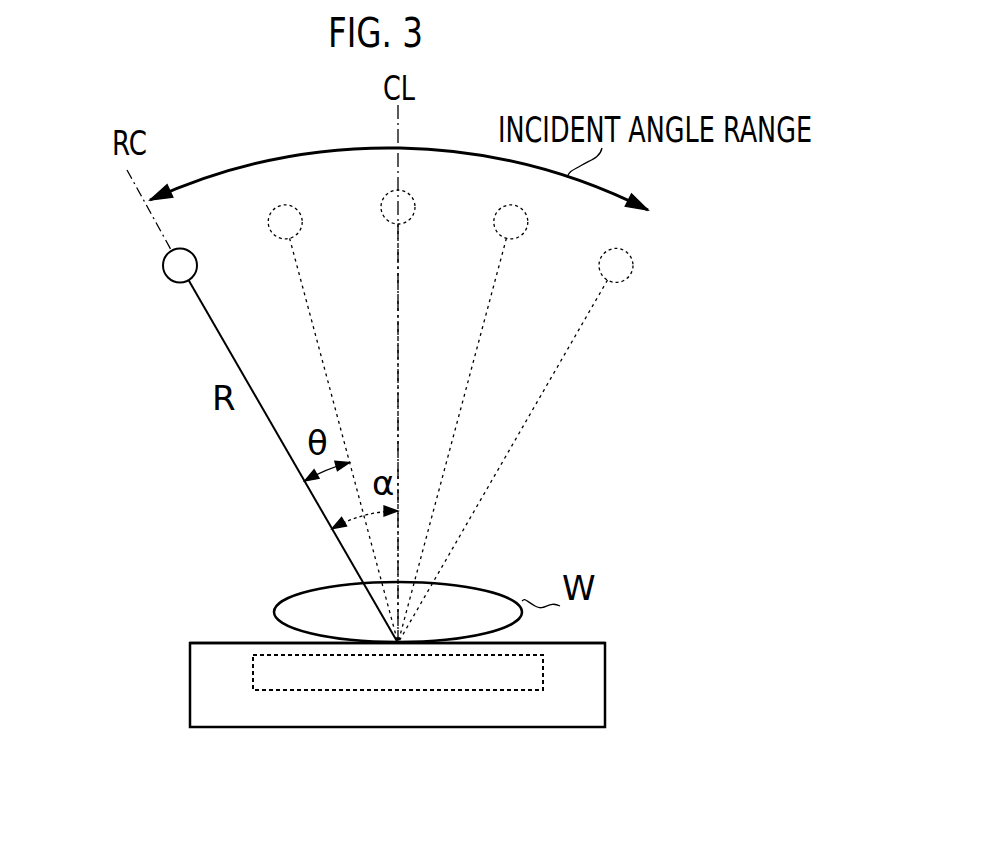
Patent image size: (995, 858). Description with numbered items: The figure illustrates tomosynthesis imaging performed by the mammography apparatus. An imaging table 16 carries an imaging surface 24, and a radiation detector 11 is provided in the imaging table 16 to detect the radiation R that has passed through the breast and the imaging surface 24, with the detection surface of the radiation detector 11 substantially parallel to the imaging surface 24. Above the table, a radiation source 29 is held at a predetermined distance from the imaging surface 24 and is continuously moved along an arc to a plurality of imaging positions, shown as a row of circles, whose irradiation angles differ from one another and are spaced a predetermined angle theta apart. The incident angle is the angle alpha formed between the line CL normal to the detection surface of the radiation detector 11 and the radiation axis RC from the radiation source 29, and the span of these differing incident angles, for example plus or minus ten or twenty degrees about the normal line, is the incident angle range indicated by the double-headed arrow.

The radiation source 29 is at (163, 265).
The imaging table 16 is at (605, 682).
The radiation detector 11 is at (510, 693).
The imaging surface 24 is at (580, 643).